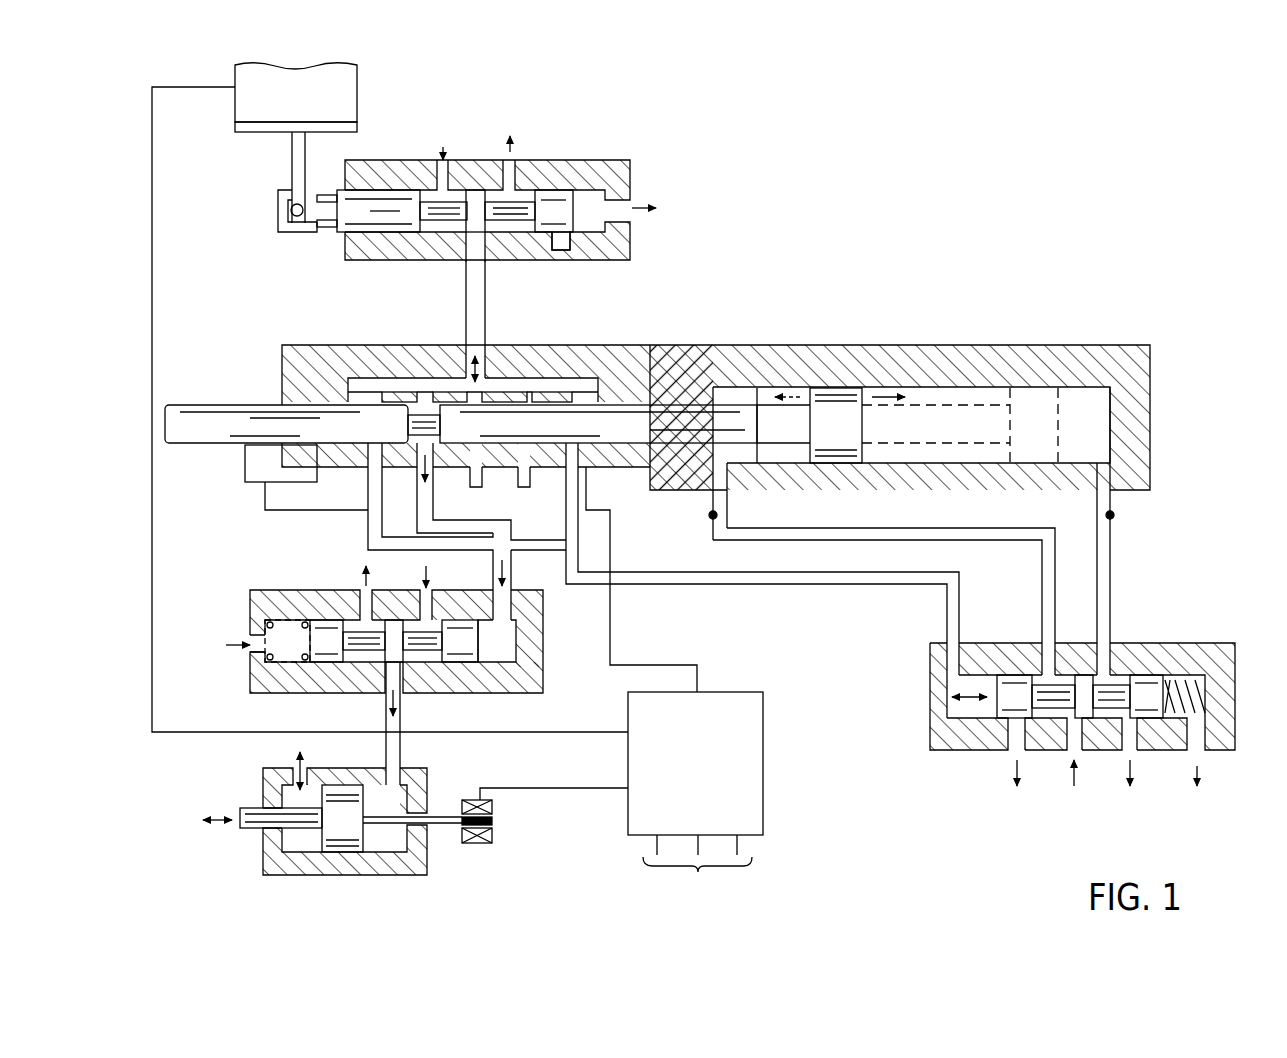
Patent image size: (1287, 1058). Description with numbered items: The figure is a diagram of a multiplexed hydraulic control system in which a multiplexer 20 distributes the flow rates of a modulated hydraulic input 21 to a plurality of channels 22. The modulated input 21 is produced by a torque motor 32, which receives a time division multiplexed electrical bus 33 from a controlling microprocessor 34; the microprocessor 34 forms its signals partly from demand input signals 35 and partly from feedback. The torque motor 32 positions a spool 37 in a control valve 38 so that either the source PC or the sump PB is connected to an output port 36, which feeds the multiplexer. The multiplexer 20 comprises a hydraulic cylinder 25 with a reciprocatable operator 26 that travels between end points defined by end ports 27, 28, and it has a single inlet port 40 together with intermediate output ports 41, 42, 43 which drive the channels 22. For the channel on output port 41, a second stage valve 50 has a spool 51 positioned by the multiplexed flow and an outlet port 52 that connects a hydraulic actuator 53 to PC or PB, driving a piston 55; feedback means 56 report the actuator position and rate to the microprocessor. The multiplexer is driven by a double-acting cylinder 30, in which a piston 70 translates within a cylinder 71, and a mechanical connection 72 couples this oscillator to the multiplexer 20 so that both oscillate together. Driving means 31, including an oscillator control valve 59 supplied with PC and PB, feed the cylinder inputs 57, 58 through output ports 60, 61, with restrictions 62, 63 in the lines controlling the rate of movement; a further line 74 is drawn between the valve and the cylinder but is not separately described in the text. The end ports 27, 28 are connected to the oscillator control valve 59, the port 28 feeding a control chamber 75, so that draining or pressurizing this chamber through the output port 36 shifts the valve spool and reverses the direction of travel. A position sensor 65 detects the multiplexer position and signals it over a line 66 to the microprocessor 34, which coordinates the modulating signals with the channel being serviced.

The multiplexer 20 is at (607, 322).
The modulated hydraulic input 21 is at (281, 255).
The channels 22 is at (218, 764).
The hydraulic cylinder 25 is at (385, 345).
The reciprocatable operator 26 is at (346, 445).
The end port 27 is at (366, 460).
The end port 28 is at (573, 448).
The double-acting cylinder 30 is at (985, 347).
The driving means 31 is at (948, 757).
The torque motor 32 is at (357, 88).
The electrical bus 33 is at (155, 206).
The microprocessor 34 is at (765, 727).
The demand input signals 35 is at (745, 838).
The output port 36 is at (480, 248).
The spool 37 is at (560, 226).
The control valve 38 is at (598, 162).
The inlet port 40 is at (505, 348).
The intermediate output port 41 is at (422, 492).
The intermediate output port 42 is at (470, 480).
The intermediate output port 43 is at (520, 478).
The second stage valve 50 is at (517, 688).
The spool 51 is at (462, 668).
The outlet port 52 is at (397, 667).
The hydraulic actuator 53 is at (300, 868).
The piston 55 is at (245, 828).
The feedback means 56 is at (488, 845).
The input 57 is at (712, 535).
The input 58 is at (1112, 556).
The oscillator control valve 59 is at (1218, 647).
The output port 60 is at (1103, 672).
The output port 61 is at (1045, 665).
The restriction 62 is at (720, 515).
The restriction 63 is at (1117, 515).
The position sensor 65 is at (243, 463).
The line 66 is at (278, 512).
The piston 70 is at (835, 393).
The cylinder 71 is at (915, 395).
The mechanical connection 72 is at (687, 420).
The conduit 74 is at (925, 536).
The control chamber 75 is at (955, 705).